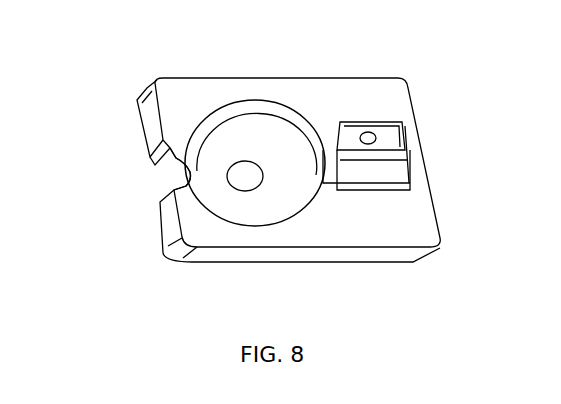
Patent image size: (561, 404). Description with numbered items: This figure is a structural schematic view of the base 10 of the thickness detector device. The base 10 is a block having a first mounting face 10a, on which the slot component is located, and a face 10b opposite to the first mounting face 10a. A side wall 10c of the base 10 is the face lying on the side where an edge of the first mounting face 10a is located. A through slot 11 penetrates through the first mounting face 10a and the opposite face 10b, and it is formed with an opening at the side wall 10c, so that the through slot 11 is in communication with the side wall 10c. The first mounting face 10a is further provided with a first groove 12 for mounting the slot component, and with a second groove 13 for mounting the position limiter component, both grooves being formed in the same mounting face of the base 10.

The base 10 is at (421, 51).
The first mounting face 10a is at (312, 93).
The face opposite to the first mounting face 10b is at (273, 262).
The side wall 10c is at (143, 122).
The through slot 11 is at (156, 181).
The first groove 12 is at (222, 130).
The second groove 13 is at (383, 173).